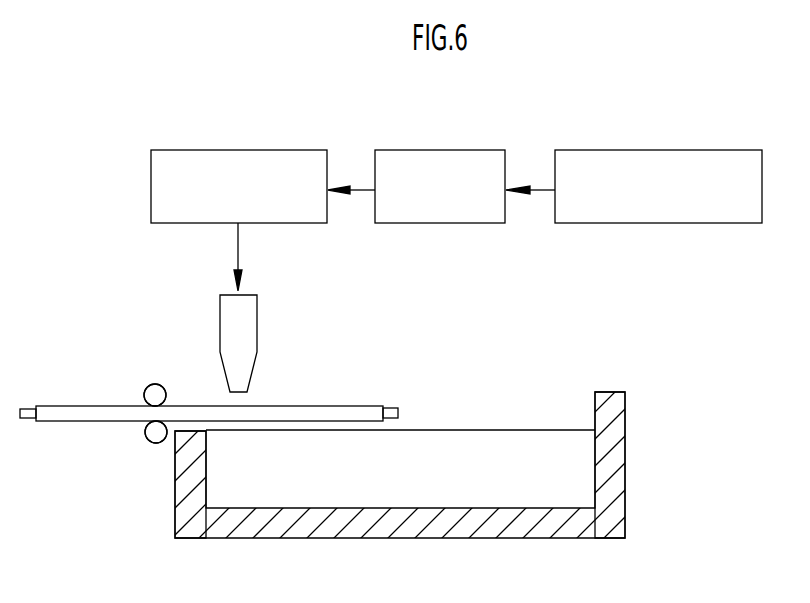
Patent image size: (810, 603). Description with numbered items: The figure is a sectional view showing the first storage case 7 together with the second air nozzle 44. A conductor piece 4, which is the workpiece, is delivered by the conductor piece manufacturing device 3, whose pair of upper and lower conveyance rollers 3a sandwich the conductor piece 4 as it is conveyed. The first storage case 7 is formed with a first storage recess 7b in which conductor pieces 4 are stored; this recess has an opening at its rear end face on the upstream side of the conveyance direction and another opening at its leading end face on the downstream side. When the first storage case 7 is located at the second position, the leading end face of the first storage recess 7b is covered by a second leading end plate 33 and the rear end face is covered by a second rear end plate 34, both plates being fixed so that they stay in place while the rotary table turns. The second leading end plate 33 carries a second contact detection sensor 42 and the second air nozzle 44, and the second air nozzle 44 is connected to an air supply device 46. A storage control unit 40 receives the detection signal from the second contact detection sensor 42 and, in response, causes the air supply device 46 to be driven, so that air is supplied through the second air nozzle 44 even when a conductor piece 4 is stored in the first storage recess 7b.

The conductor piece manufacturing device 3 is at (146, 389).
The conveyance rollers 3a is at (165, 396).
The conductor piece 4 is at (318, 405).
The first storage case 7 is at (415, 445).
The first storage recess 7b is at (522, 428).
The second leading end plate 33 is at (610, 398).
The second rear end plate 34 is at (182, 480).
The storage control unit 40 is at (437, 150).
The second contact detection sensor 42 is at (657, 150).
The second air nozzle 44 is at (220, 328).
The air supply device 46 is at (235, 150).